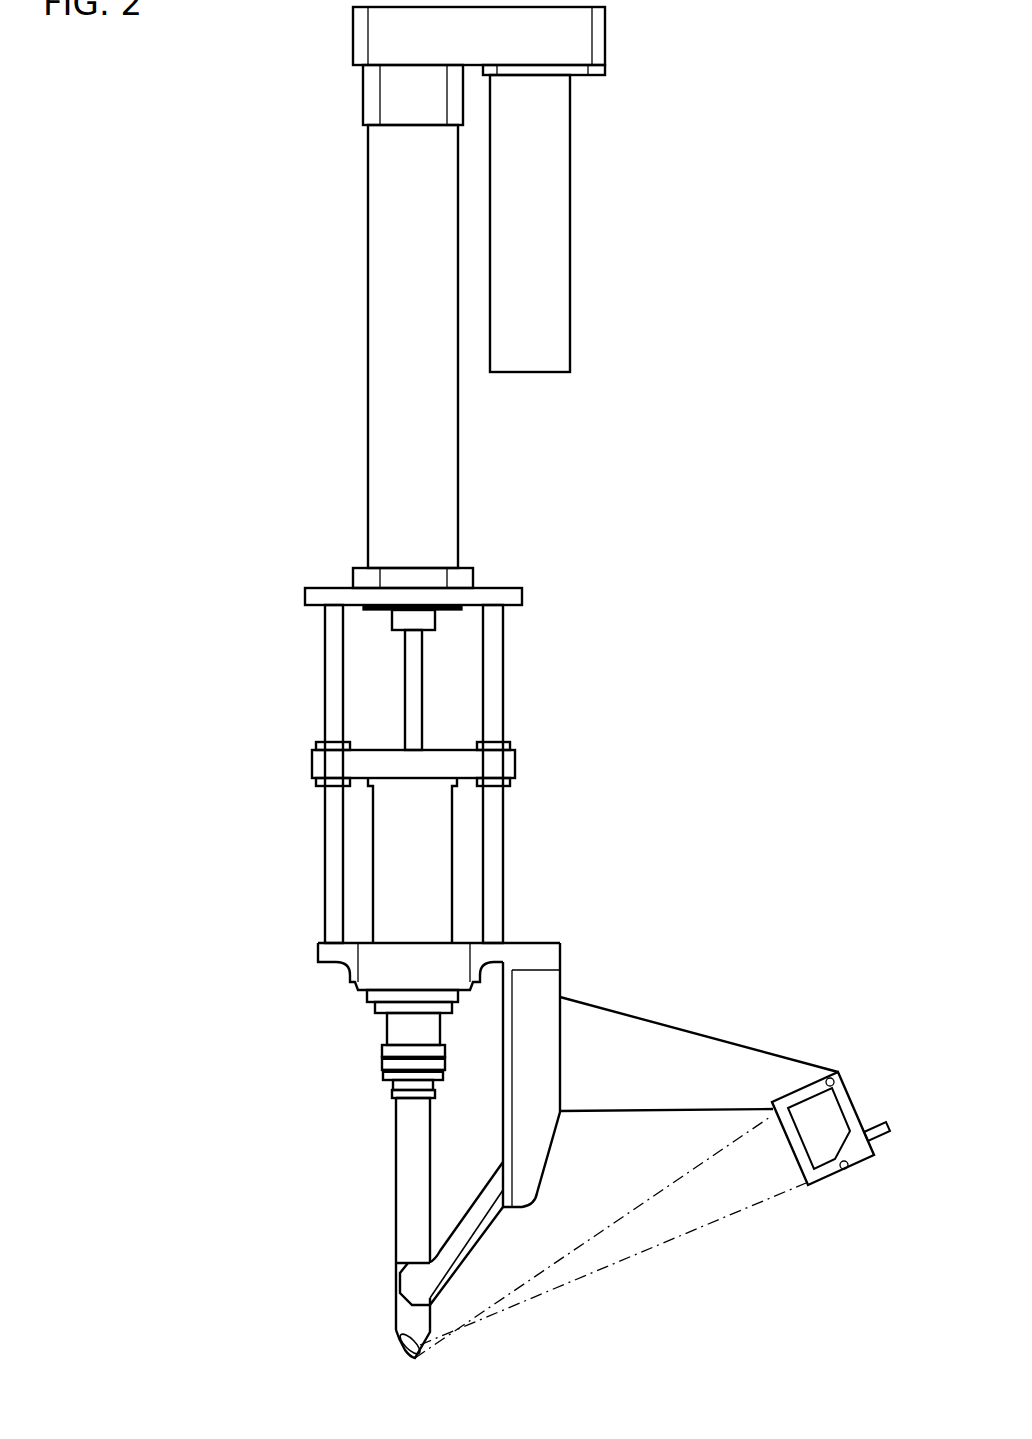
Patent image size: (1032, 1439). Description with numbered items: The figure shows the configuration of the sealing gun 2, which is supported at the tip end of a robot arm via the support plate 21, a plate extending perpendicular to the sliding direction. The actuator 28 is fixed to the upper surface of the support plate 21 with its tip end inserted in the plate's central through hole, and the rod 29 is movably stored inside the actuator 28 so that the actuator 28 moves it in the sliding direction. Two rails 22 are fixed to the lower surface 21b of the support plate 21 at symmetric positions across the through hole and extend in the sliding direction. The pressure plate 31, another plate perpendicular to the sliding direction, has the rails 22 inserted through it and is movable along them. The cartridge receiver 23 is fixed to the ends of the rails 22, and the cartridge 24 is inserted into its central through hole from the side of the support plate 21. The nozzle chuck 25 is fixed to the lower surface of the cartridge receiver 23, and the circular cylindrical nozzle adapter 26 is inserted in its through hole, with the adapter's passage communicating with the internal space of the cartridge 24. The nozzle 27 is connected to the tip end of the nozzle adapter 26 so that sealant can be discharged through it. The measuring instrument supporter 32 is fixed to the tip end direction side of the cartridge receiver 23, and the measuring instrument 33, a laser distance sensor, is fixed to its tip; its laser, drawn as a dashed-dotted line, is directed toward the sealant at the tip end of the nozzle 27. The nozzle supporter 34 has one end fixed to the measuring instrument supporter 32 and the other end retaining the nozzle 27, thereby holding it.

The sealing gun 2 is at (230, 63).
The support plate 21 is at (313, 586).
The lower surface 21b is at (512, 605).
The rails 22 is at (325, 712).
The cartridge receiver 23 is at (318, 950).
The cartridge 24 is at (453, 873).
The nozzle chuck 25 is at (382, 1053).
The nozzle adapter 26 is at (396, 1140).
The nozzle 27 is at (396, 1308).
The actuator 28 is at (367, 293).
The rod 29 is at (403, 657).
The pressure plate 31 is at (312, 762).
The measuring instrument supporter 32 is at (632, 1010).
The measuring instrument 33 is at (850, 1098).
The nozzle supporter 34 is at (485, 1230).